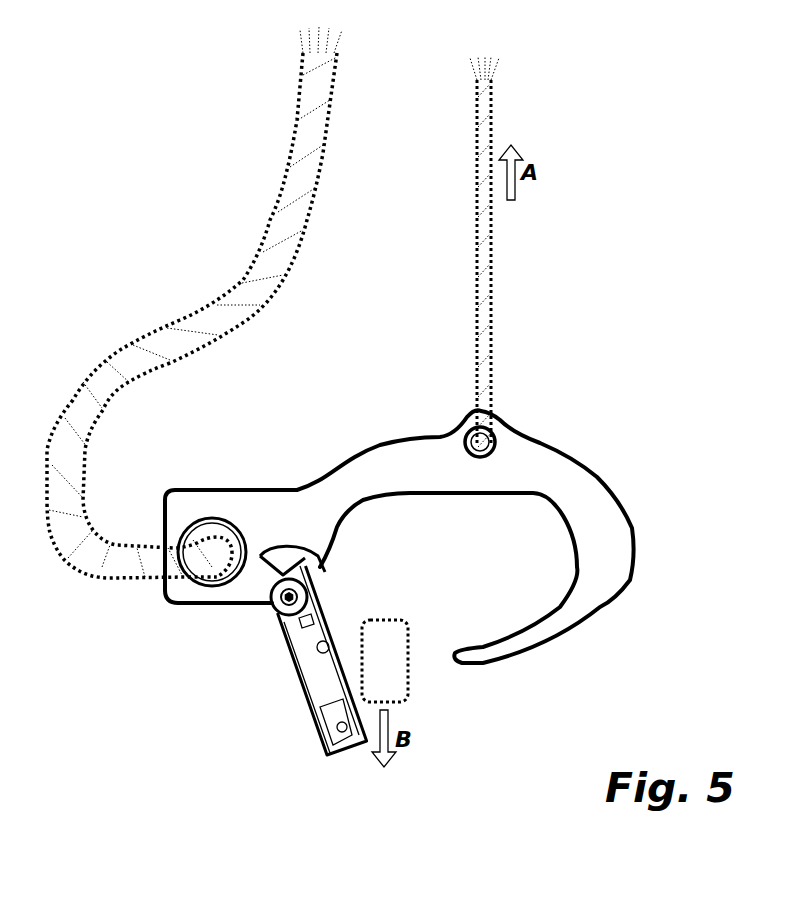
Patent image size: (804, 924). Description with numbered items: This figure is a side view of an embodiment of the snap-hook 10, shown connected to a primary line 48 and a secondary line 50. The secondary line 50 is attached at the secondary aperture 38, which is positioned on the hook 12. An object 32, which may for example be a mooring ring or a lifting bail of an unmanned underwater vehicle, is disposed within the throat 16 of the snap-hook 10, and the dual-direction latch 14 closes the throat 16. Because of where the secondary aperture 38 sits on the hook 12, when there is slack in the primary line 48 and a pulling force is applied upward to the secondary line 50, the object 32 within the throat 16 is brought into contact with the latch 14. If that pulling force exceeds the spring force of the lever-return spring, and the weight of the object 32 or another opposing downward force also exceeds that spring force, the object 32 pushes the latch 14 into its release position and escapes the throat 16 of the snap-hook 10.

The snap-hook 10 is at (643, 382).
The hook 12 is at (633, 530).
The dual-direction latch 14 is at (300, 682).
The throat 16 is at (521, 562).
The object 32 is at (407, 620).
The secondary aperture 38 is at (496, 446).
The primary line 48 is at (262, 250).
The secondary line 50 is at (493, 270).